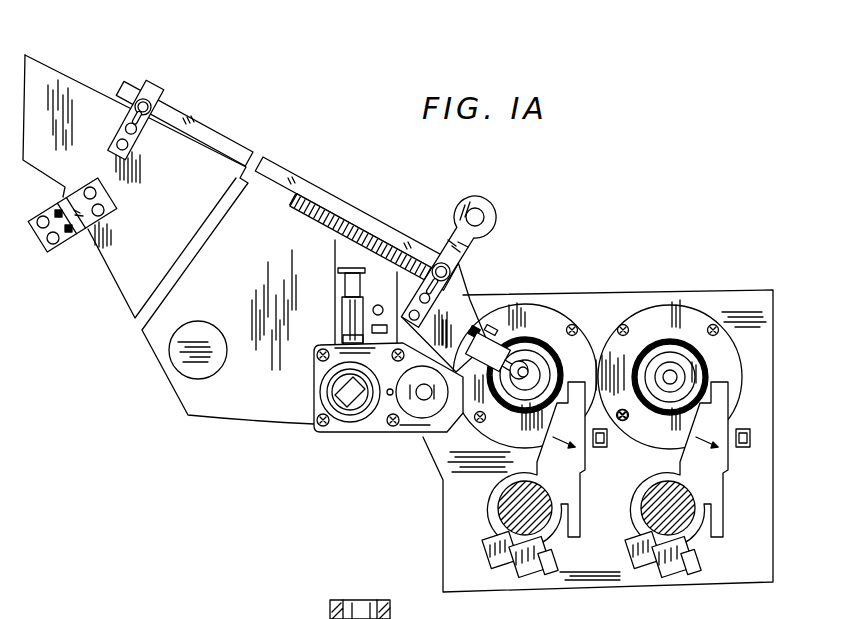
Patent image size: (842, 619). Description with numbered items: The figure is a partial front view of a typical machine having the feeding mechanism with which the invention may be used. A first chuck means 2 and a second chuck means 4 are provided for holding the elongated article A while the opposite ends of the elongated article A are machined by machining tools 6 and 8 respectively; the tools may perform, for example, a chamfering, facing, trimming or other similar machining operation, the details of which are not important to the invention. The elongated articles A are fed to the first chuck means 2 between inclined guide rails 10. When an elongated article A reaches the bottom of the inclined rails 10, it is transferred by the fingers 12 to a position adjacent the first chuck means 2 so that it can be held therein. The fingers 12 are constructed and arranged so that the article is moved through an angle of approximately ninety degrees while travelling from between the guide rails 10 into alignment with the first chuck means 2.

The inclined guide rails 10 is at (176, 158).
The elongated article A is at (319, 221).
The first chuck means 2 is at (532, 362).
The fingers 12 is at (523, 349).
The second chuck means 4 is at (681, 358).
The machining tool 6 is at (575, 394).
The machining tool 8 is at (717, 388).